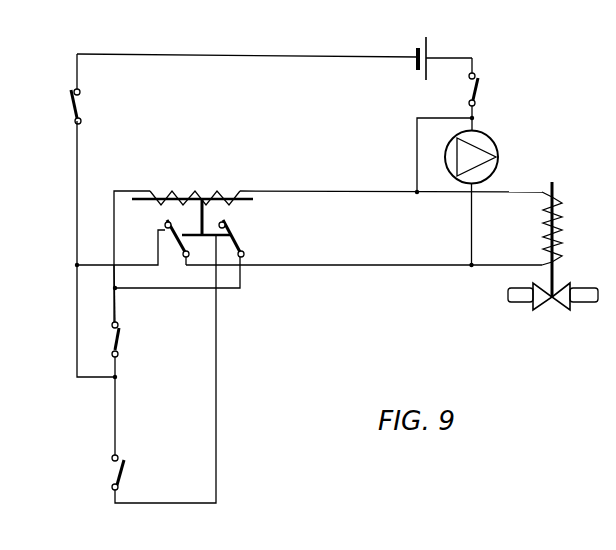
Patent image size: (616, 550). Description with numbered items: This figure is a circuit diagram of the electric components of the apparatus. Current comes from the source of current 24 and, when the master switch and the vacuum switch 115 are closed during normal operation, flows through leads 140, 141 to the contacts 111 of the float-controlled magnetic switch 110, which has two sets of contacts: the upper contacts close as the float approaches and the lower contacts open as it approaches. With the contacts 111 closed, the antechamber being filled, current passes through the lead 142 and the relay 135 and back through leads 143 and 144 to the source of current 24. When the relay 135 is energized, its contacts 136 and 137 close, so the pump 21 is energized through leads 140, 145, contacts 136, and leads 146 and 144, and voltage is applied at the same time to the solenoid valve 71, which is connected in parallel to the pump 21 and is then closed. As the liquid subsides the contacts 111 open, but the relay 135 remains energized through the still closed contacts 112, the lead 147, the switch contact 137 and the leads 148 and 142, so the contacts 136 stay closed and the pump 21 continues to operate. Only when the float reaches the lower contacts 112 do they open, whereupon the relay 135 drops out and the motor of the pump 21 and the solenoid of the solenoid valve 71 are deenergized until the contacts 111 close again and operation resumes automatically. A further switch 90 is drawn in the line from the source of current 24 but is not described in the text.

The pump 21 is at (500, 151).
The source of current 24 is at (418, 44).
The solenoid valve 71 is at (558, 264).
The switch 90 is at (483, 81).
The float-controlled magnetic switch 110 is at (187, 410).
The contacts 111 is at (122, 337).
The contacts 112 is at (127, 474).
The vacuum switch 115 is at (70, 107).
The relay 135 is at (183, 193).
The contacts 136 is at (165, 224).
The switch contact 137 is at (225, 225).
The lead 140 is at (172, 56).
The lead 141 is at (77, 297).
The lead 142 is at (113, 225).
The lead 143 is at (415, 144).
The lead 144 is at (475, 115).
The lead 145 is at (98, 263).
The lead 146 is at (331, 267).
The lead 147 is at (217, 450).
The lead 148 is at (230, 292).